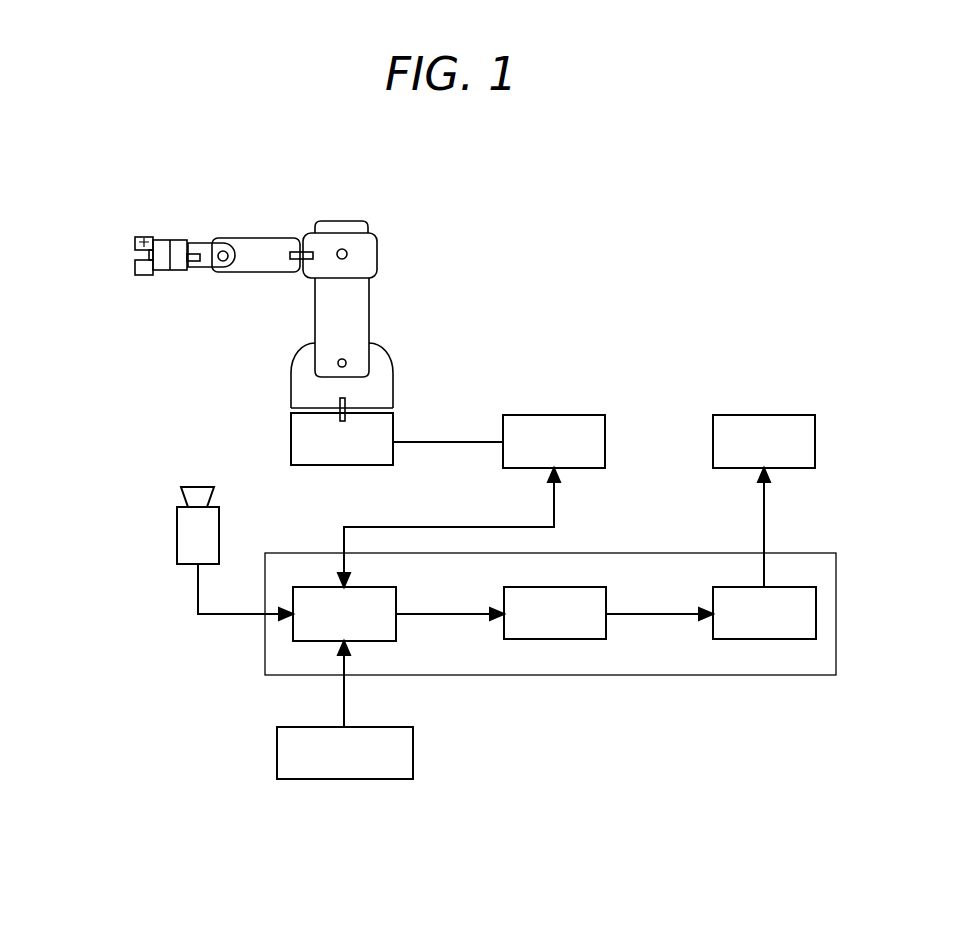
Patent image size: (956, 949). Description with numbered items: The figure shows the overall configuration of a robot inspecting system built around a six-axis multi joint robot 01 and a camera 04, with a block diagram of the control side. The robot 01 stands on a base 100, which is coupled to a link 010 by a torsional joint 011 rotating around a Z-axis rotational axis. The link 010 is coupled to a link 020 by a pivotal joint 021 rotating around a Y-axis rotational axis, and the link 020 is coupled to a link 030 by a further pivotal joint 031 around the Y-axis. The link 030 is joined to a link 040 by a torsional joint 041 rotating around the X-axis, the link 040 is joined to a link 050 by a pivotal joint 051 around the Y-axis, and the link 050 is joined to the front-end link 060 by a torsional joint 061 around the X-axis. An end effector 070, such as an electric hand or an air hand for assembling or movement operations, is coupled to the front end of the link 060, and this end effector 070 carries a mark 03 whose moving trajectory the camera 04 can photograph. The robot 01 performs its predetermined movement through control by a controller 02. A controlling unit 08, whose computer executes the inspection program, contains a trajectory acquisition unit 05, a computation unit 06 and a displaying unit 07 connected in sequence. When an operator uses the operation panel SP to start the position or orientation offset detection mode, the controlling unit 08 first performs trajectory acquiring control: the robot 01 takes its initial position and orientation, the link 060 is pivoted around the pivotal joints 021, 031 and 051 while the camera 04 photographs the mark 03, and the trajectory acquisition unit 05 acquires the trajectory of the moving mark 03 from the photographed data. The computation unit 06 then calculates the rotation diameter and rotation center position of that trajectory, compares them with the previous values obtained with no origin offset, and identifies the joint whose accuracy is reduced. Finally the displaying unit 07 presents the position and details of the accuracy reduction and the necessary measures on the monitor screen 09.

The robot 01 is at (276, 289).
The link 010 is at (302, 384).
The torsional joint 011 is at (346, 400).
The link 020 is at (362, 310).
The pivotal joint 021 is at (347, 362).
The link 030 is at (377, 249).
The pivotal joint 031 is at (347, 258).
The link 040 is at (277, 243).
The torsional joint 041 is at (293, 266).
The link 050 is at (205, 247).
The pivotal joint 051 is at (223, 262).
The link 060 is at (177, 246).
The torsional joint 061 is at (195, 263).
The end effector 070 is at (116, 223).
The mark 03 is at (133, 242).
The base 100 is at (302, 440).
The controller 02 is at (566, 415).
The camera 04 is at (187, 533).
The trajectory acquisition unit 05 is at (376, 642).
The computation unit 06 is at (578, 640).
The displaying unit 07 is at (792, 640).
The controlling unit 08 is at (550, 607).
The monitor screen 09 is at (776, 415).
The operation panel SP is at (377, 780).